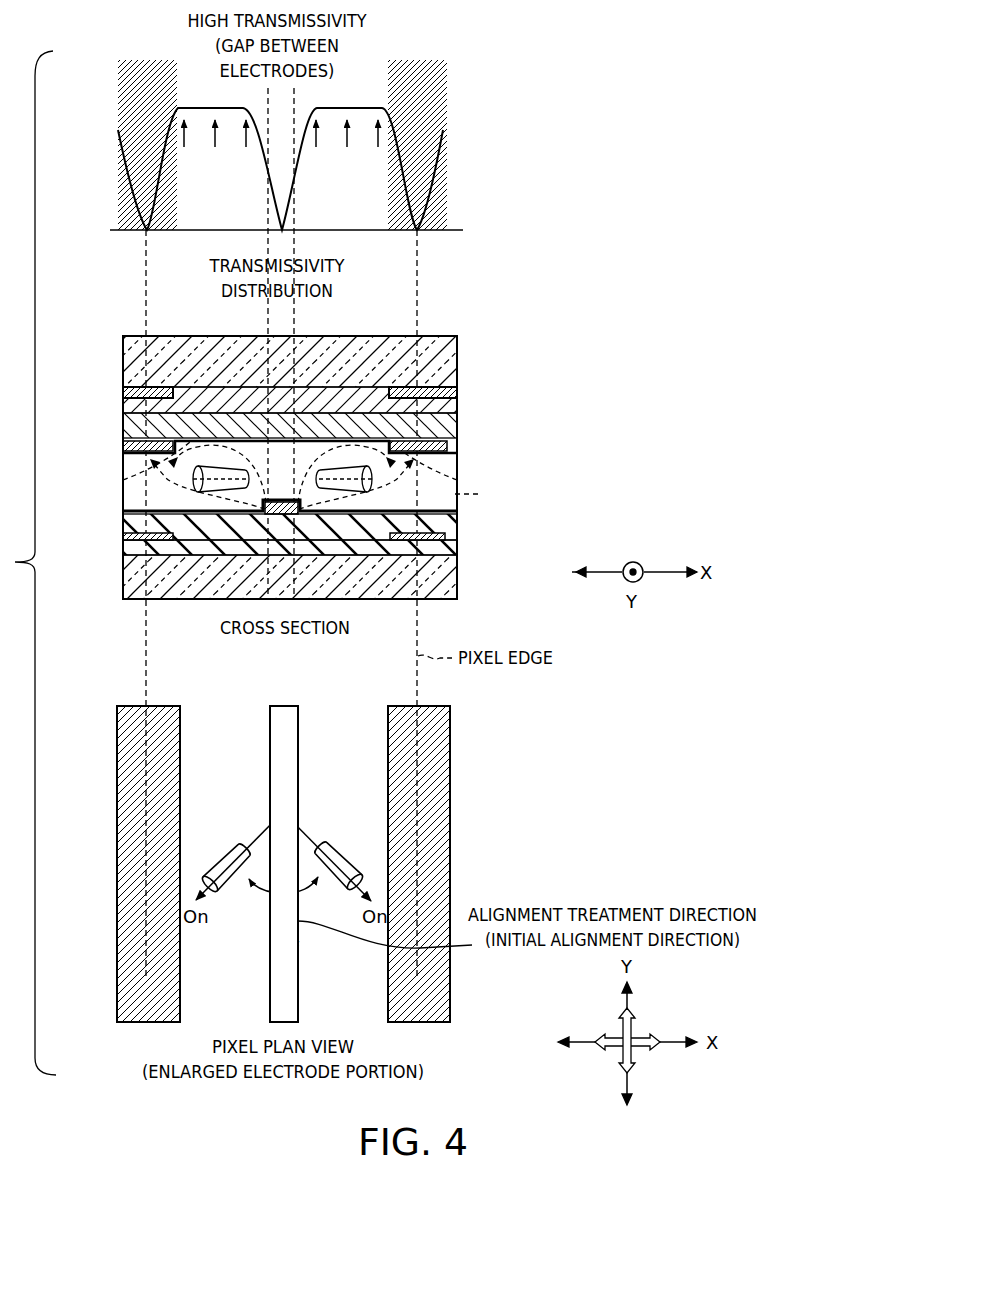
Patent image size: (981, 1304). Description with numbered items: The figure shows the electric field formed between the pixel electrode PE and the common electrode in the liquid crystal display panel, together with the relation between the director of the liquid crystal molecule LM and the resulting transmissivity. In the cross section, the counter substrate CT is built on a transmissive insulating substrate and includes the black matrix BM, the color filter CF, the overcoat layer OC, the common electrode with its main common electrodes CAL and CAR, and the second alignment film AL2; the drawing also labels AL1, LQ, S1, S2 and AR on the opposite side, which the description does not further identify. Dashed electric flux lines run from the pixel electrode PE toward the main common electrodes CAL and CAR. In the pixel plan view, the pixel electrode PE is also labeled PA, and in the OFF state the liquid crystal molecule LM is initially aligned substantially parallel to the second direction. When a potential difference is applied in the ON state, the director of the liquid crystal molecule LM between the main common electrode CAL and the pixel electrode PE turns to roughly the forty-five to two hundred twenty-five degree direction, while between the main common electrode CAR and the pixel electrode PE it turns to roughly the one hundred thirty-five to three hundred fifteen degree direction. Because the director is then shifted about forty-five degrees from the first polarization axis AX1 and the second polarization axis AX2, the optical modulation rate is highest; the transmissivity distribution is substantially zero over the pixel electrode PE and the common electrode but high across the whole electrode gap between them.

The black matrix BM is at (484, 380).
The counter substrate CT is at (462, 338).
The color filter CF is at (457, 407).
The overcoat layer OC is at (457, 430).
The main common electrode CAL is at (123, 447).
The main common electrode CAR is at (448, 447).
The first alignment film AL1 is at (457, 517).
The second alignment film AL2 is at (457, 462).
The liquid crystal molecule LM is at (192, 483).
The liquid crystal layer LQ is at (128, 498).
The first source line S1 is at (123, 537).
The second source line S2 is at (457, 544).
The pixel electrode PE is at (219, 762).
The pixel electrode main portion PA is at (317, 864).
The array substrate AR is at (461, 600).
The first polarization axis AX1 is at (650, 1032).
The second polarization axis AX2 is at (631, 1072).